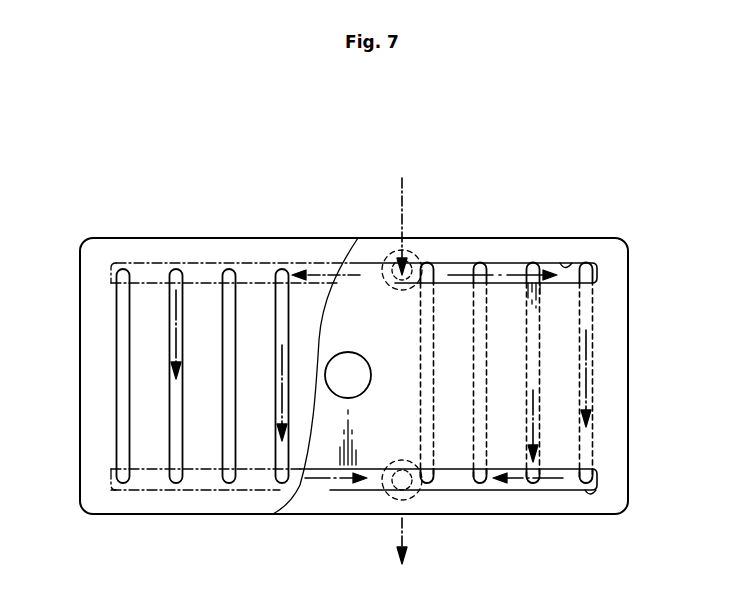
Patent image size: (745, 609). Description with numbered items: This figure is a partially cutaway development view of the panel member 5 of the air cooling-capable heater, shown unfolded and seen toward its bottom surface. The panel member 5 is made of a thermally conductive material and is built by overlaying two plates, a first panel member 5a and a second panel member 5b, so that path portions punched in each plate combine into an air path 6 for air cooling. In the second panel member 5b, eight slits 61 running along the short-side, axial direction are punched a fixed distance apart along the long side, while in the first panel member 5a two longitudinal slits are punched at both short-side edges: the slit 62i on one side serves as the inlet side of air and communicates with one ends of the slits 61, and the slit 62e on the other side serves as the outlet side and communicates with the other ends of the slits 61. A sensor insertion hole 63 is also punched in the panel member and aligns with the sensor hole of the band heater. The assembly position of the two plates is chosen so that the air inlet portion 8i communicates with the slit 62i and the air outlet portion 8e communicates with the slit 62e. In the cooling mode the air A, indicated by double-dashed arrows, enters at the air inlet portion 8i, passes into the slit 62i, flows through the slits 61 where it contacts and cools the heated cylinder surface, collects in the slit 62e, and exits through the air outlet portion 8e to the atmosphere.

The panel member 5 is at (135, 521).
The first panel member 5a is at (535, 516).
The second panel member 5b is at (235, 238).
The air path 6 is at (176, 483).
The slits 61 is at (174, 384).
The slit on one side 62i is at (565, 266).
The slit on the other side 62e is at (597, 492).
The sensor insertion hole 63 is at (350, 388).
The air inlet portion 8i is at (393, 262).
The air outlet portion 8e is at (412, 498).
The air A is at (406, 186).